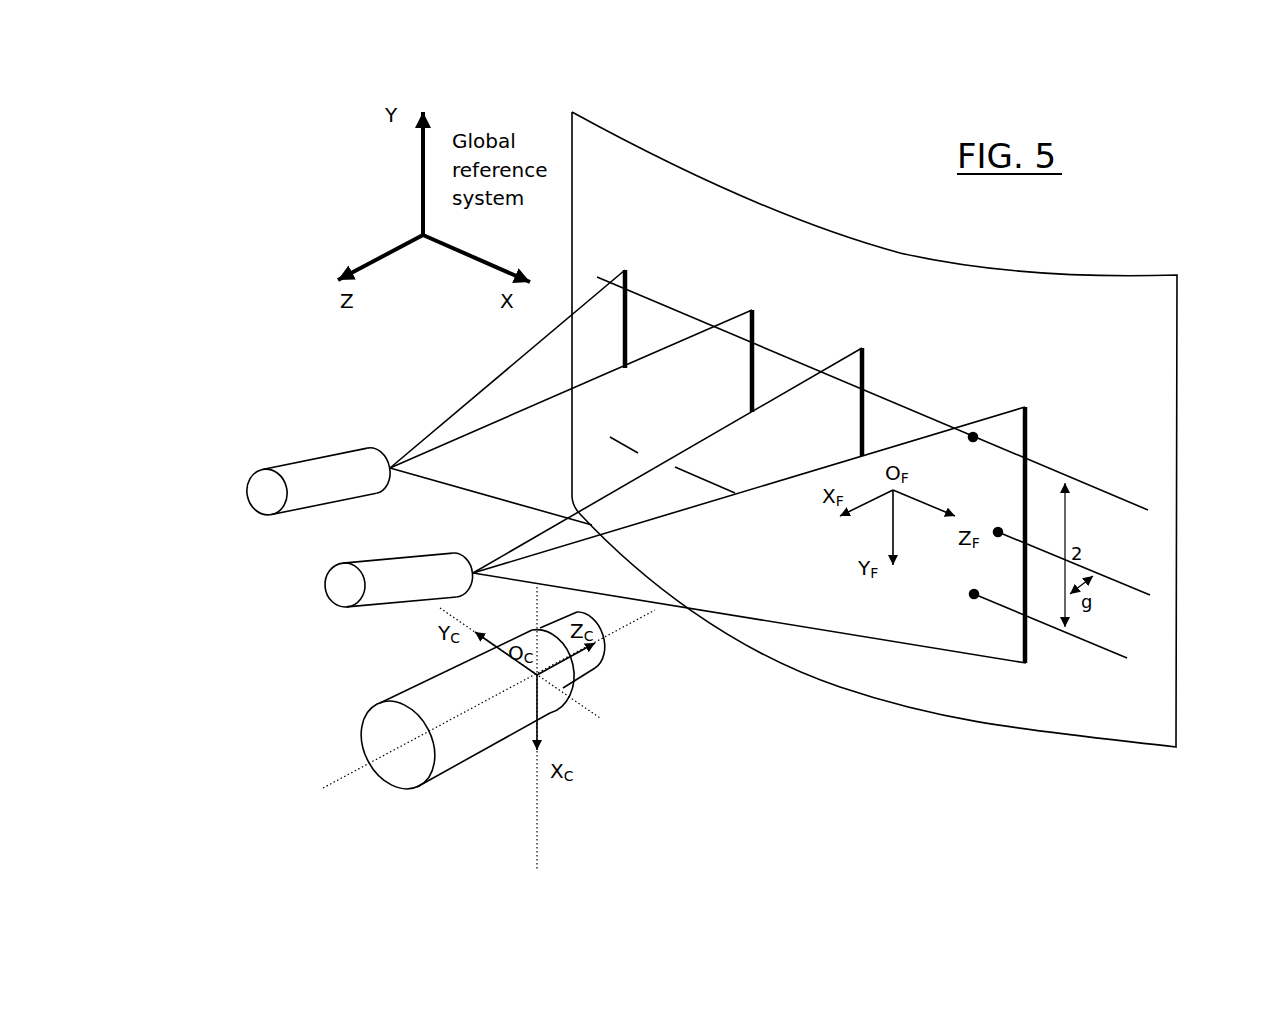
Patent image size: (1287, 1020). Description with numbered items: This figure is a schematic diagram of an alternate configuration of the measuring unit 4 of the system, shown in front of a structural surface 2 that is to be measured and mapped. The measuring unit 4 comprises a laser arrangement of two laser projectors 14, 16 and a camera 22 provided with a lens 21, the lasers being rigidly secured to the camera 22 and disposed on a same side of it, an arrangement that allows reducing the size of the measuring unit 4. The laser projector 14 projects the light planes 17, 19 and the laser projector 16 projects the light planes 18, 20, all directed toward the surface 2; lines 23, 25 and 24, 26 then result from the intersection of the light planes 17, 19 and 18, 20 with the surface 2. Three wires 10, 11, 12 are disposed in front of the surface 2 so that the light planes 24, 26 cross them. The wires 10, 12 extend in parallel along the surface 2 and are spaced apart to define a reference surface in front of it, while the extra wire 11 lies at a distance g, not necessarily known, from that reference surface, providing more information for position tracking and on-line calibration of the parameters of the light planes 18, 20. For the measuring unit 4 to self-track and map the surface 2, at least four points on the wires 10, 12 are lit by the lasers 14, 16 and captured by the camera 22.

The structural surface 2 is at (1138, 728).
The measuring unit 4 is at (232, 428).
The wire 10 is at (1135, 500).
The wire 11 is at (1127, 583).
The wire 12 is at (1117, 660).
The laser 14 is at (323, 467).
The laser 16 is at (392, 592).
The light plane 17 is at (455, 425).
The light plane 18 is at (647, 494).
The light plane 19 is at (477, 480).
The light plane 20 is at (722, 587).
The lens 21 is at (593, 663).
The camera 22 is at (472, 732).
The line 23 is at (625, 270).
The line 24 is at (862, 348).
The line 25 is at (752, 310).
The line 26 is at (1025, 407).